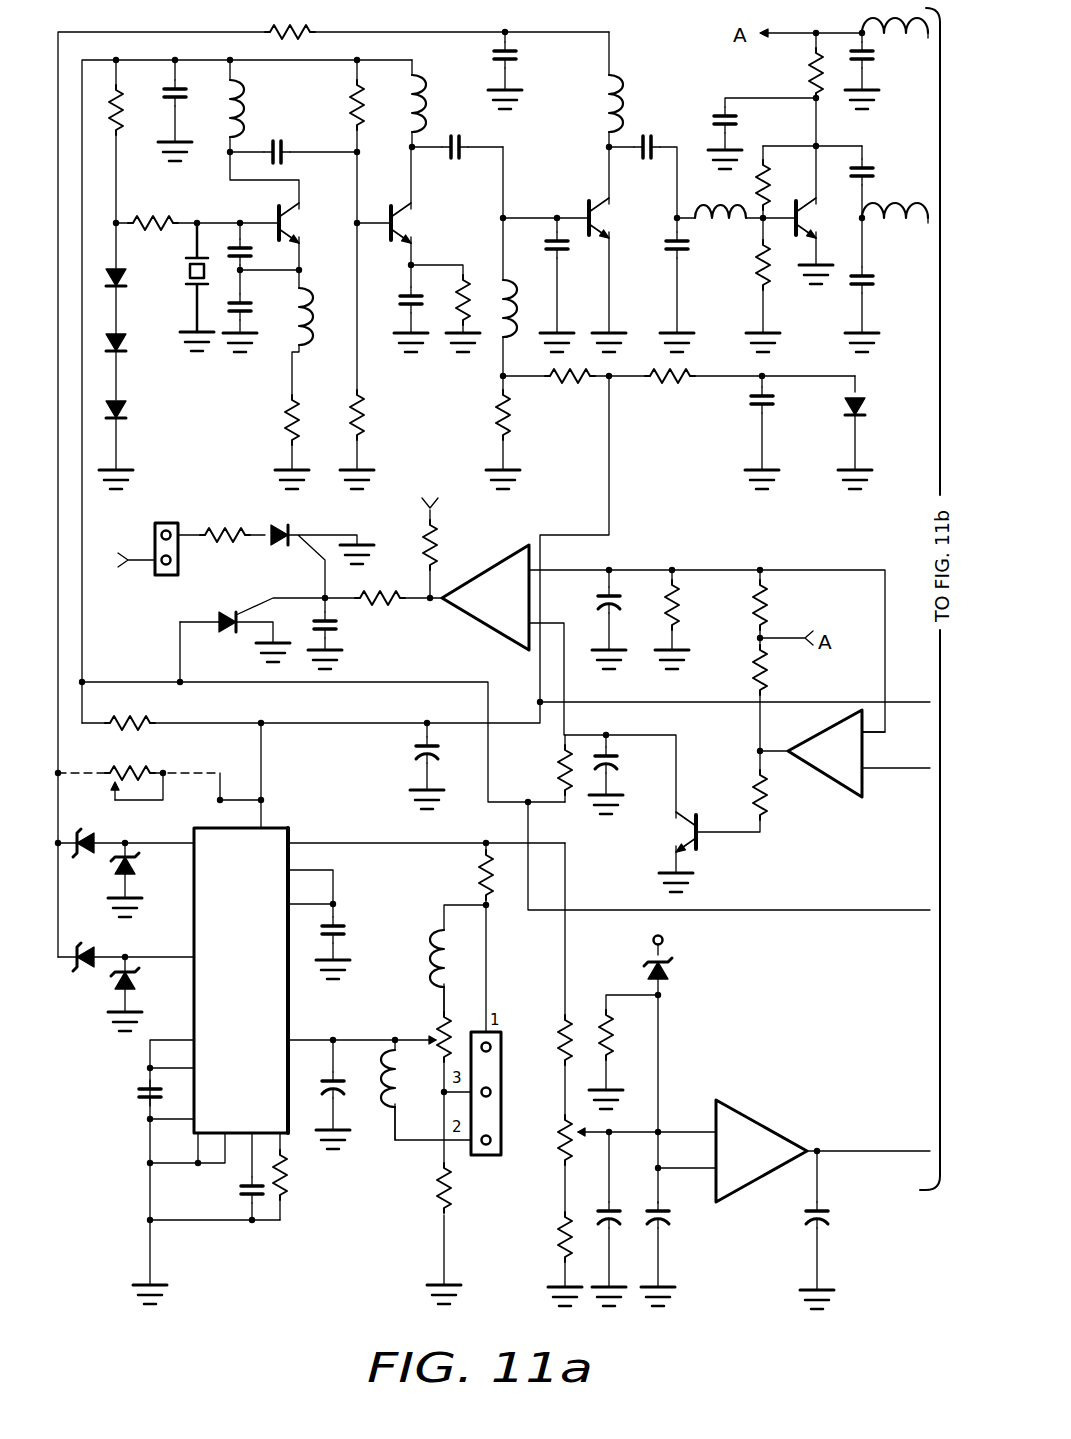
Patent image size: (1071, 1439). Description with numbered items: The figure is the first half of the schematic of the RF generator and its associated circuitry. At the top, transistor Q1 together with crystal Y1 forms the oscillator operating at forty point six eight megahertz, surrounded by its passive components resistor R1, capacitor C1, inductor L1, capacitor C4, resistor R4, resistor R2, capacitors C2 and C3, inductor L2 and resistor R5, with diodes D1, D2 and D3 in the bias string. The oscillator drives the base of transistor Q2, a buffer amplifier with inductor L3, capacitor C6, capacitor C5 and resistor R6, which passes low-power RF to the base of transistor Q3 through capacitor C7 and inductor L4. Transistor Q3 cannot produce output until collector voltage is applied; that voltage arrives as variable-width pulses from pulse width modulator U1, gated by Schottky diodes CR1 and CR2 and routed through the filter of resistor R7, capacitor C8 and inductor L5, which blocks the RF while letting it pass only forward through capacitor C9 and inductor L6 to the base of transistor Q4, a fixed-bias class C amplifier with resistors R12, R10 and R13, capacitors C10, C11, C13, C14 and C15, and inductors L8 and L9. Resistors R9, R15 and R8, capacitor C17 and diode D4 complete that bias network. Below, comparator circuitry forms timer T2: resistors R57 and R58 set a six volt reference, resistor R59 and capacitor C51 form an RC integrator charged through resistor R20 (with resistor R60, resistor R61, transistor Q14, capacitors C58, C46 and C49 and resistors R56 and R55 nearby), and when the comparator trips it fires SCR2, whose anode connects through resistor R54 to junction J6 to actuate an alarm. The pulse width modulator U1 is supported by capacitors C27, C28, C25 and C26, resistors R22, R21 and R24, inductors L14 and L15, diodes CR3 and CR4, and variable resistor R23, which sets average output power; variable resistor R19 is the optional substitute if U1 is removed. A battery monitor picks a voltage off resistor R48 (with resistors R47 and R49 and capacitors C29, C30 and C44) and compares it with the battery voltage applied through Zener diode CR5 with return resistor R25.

The resistor R7 is at (290, 22).
The resistor R1 is at (131, 141).
The capacitor C1 is at (187, 110).
The inductor L1 is at (252, 106).
The capacitor C4 is at (293, 142).
The resistor R4 is at (372, 141).
The resistor R2 is at (223, 340).
The transistor Q1 is at (281, 211).
The crystal Y1 is at (186, 287).
The capacitor C2 is at (264, 246).
The capacitor C3 is at (251, 311).
The inductor L2 is at (318, 332).
The resistor R5 is at (367, 356).
The inductor L3 is at (434, 103).
The capacitor C6 is at (457, 163).
The transistor Q2 is at (417, 206).
The capacitor C5 is at (401, 308).
The resistor R6 is at (454, 308).
The capacitor C8 is at (517, 70).
The inductor L4 is at (524, 261).
The capacitor C7 is at (542, 285).
The transistor Q3 is at (615, 249).
The inductor L5 is at (631, 89).
The capacitor C9 is at (643, 177).
The inductor L6 is at (736, 197).
The capacitor C10 is at (694, 285).
The resistor R12 is at (784, 182).
The resistor R10 is at (745, 285).
The transistor Q4 is at (822, 215).
The resistor R13 is at (795, 89).
The capacitor C11 is at (762, 133).
The inductor L8 is at (872, 39).
The capacitor C14 is at (878, 71).
The capacitor C13 is at (884, 182).
The inductor L9 is at (895, 229).
The capacitor C15 is at (880, 285).
The resistor R9 is at (556, 389).
The resistor R15 is at (732, 389).
The resistor R8 is at (514, 432).
The capacitor C17 is at (779, 432).
The diode D4 is at (868, 432).
The diode D1 is at (131, 279).
The diode D2 is at (131, 367).
The diode D3 is at (127, 445).
The resistor R20 is at (118, 711).
The resistor R56 is at (450, 536).
The resistor R55 is at (377, 586).
The capacitor C49 is at (343, 633).
The junction J6 is at (146, 538).
The resistor R54 is at (231, 523).
The SCR SCR2 is at (277, 586).
The capacitor C58 is at (588, 619).
The resistor R57 is at (688, 619).
The resistor R58 is at (782, 604).
The resistor R60 is at (782, 694).
The resistor R61 is at (753, 791).
The transistor Q14 is at (665, 852).
The capacitor C51 is at (624, 774).
The resistor R59 is at (541, 768).
The capacitor C46 is at (402, 766).
The variable resistor R19 is at (129, 761).
The Schottky barrier diode CR1 is at (126, 833).
The zener diode CR3 is at (143, 880).
The Schottky barrier diode CR2 is at (126, 947).
The zener diode CR4 is at (143, 994).
The pulse width modulator U1 is at (240, 986).
The capacitor C27 is at (351, 941).
The capacitor C28 is at (350, 1094).
The resistor R22 is at (464, 875).
The inductor L14 is at (417, 971).
The variable resistor R23 is at (418, 1036).
The inductor L15 is at (409, 1090).
The resistor R24 is at (424, 1233).
The capacitor C25 is at (127, 1093).
The capacitor C26 is at (233, 1176).
The resistor R21 is at (301, 1176).
The resistor R47 is at (543, 1038).
The resistor R48 is at (541, 1140).
The resistor R49 is at (545, 1259).
The capacitor C29 is at (618, 1219).
The capacitor C30 is at (668, 1244).
The Zener diode CR5 is at (683, 962).
The resistor R25 is at (623, 1052).
The capacitor C44 is at (833, 1230).